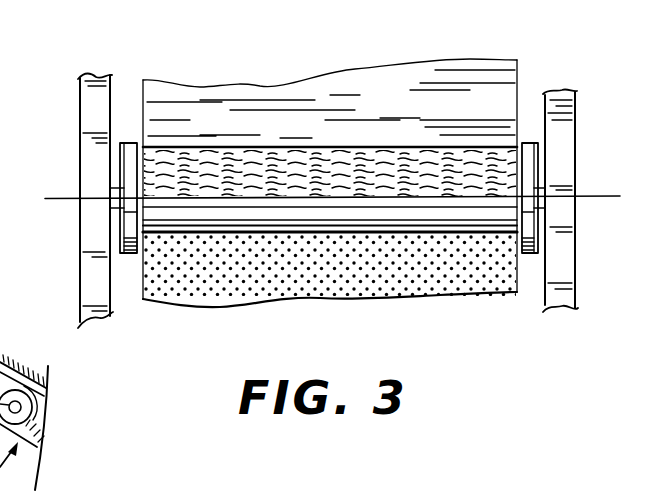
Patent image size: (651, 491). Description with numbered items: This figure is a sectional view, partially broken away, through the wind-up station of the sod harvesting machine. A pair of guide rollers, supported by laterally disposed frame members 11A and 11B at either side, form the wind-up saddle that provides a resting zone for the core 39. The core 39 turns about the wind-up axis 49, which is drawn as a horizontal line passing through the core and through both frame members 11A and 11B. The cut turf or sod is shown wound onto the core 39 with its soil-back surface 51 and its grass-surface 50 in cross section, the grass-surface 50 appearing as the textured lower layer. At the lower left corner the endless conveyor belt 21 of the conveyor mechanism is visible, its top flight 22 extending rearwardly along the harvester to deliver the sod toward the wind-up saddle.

The endless conveyor belt 21 is at (203, 86).
The soil-back surface 51 is at (372, 167).
The core 39 is at (500, 220).
The grass-surface 50 is at (233, 285).
The wind-up axis 49 is at (58, 198).
The frame member 11A is at (90, 90).
The frame member 11B is at (576, 121).
The top flight 22 is at (0, 331).